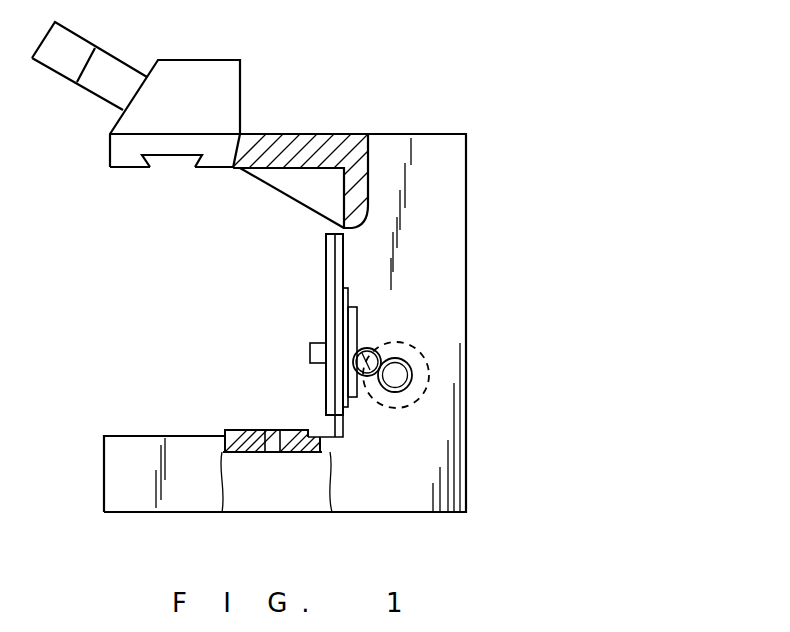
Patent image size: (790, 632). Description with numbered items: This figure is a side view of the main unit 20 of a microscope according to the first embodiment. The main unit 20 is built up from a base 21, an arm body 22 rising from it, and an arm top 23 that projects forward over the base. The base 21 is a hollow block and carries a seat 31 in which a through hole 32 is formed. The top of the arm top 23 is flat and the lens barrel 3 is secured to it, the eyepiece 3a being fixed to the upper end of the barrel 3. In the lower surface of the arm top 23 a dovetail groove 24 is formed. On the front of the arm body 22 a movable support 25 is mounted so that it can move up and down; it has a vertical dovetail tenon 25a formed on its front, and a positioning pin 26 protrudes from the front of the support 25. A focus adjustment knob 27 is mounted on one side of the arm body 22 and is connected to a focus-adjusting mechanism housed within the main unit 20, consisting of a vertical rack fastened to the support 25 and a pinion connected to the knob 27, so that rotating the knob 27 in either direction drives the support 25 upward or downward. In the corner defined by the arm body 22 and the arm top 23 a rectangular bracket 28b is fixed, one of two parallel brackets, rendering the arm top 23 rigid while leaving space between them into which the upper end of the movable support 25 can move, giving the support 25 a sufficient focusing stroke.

The lens barrel 3 is at (230, 87).
The eyepiece 3a is at (77, 28).
The main unit 20 is at (431, 135).
The base 21 is at (141, 500).
The arm body 22 is at (450, 300).
The arm top 23 is at (117, 156).
The dovetail groove 24 is at (173, 160).
The movable support 25 is at (343, 310).
The vertical dovetail tenon 25a is at (330, 263).
The positioning pin 26 is at (310, 354).
The focus adjustment knob 27 is at (427, 378).
The rectangular bracket 28b is at (243, 170).
The seat 31 is at (238, 430).
The through hole 32 is at (272, 436).